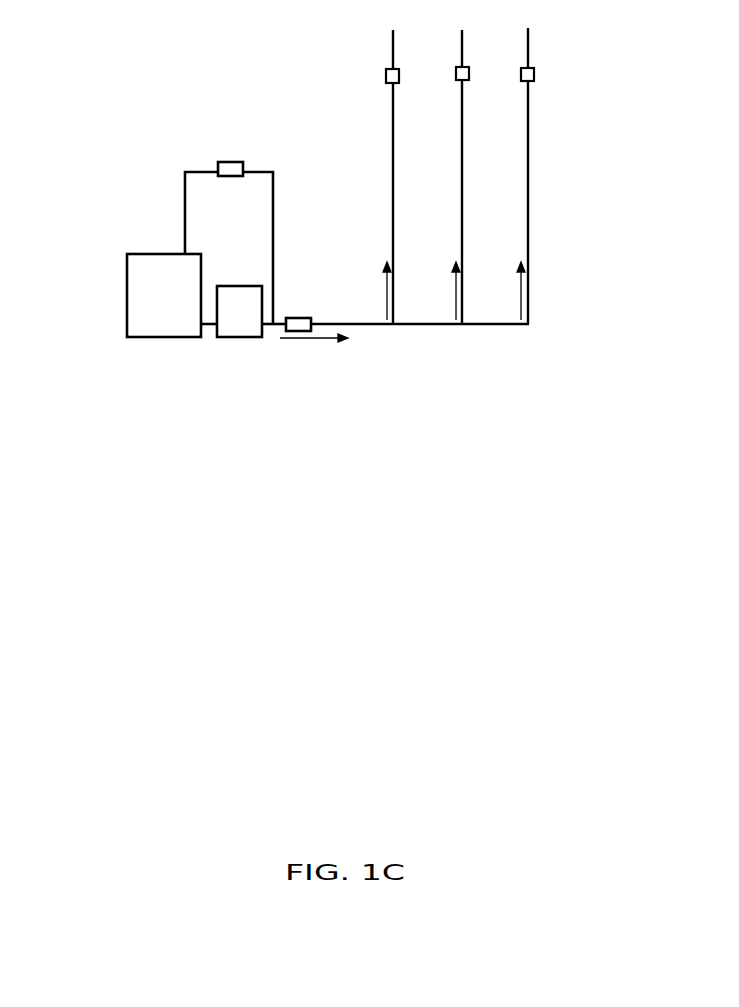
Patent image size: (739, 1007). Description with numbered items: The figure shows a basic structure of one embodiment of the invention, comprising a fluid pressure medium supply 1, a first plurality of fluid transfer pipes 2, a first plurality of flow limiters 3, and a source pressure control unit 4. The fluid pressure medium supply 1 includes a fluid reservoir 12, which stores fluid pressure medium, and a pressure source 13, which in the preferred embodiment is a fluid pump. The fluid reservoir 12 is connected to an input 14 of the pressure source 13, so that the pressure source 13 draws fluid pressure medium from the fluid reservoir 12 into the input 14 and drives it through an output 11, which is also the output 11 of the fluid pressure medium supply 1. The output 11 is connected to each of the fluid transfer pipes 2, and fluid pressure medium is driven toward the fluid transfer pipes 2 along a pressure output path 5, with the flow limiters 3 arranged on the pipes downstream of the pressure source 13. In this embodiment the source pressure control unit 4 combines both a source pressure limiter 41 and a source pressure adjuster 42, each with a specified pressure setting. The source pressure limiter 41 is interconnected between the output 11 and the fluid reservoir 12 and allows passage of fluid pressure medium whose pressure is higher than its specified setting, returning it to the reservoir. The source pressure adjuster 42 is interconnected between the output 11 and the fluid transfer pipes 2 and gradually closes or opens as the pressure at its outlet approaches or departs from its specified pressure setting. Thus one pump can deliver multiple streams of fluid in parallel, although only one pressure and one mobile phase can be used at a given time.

The fluid pressure medium supply 1 is at (150, 376).
The fluid transfer pipes 2 is at (391, 222).
The flow limiters 3 is at (386, 74).
The source pressure control unit 4 is at (296, 150).
The pressure output path 5 is at (320, 340).
The output 11 is at (267, 327).
The fluid reservoir 12 is at (127, 299).
The pressure source 13 is at (240, 335).
The input 14 is at (207, 327).
The source pressure limiter 41 is at (237, 162).
The source pressure adjuster 42 is at (299, 318).